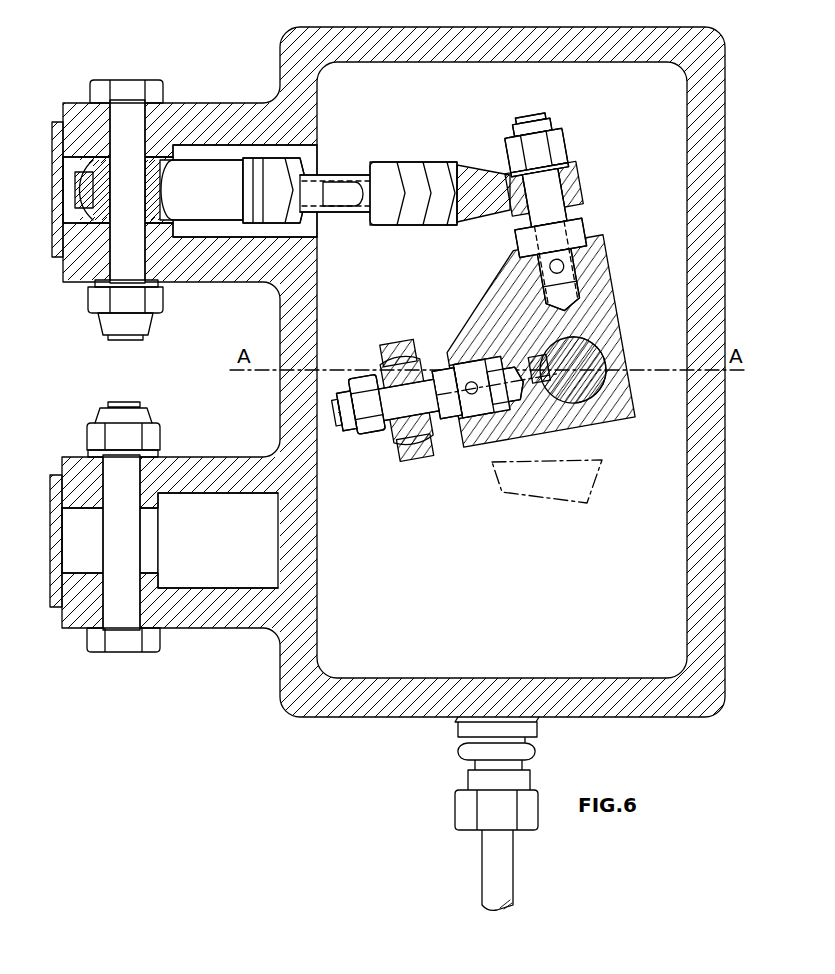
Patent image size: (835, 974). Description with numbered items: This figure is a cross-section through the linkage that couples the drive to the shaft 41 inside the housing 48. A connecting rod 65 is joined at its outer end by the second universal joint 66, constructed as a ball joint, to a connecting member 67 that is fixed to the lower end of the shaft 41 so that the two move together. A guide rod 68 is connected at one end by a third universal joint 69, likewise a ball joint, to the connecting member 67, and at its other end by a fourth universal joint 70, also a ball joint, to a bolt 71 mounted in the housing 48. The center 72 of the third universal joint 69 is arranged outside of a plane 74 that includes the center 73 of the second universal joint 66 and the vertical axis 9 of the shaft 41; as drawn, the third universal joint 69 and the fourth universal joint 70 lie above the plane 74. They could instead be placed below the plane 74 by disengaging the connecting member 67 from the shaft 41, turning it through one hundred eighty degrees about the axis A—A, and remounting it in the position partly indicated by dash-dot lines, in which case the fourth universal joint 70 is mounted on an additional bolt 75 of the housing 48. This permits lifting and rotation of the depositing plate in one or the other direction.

The vertical axis 9 is at (574, 372).
The shaft 41 is at (587, 351).
The housing 48 is at (718, 508).
The connecting rod 65 is at (417, 344).
The second universal joint 66 is at (381, 363).
The connecting member 67 is at (621, 424).
The guide rod 68 is at (343, 172).
The third universal joint 69 is at (510, 214).
The fourth universal joint 70 is at (162, 177).
The bolt 71 is at (137, 250).
The center of the third universal joint 72 is at (546, 196).
The center of the second universal joint 73 is at (407, 399).
The plane 74 is at (338, 411).
The additional bolt 75 is at (141, 530).